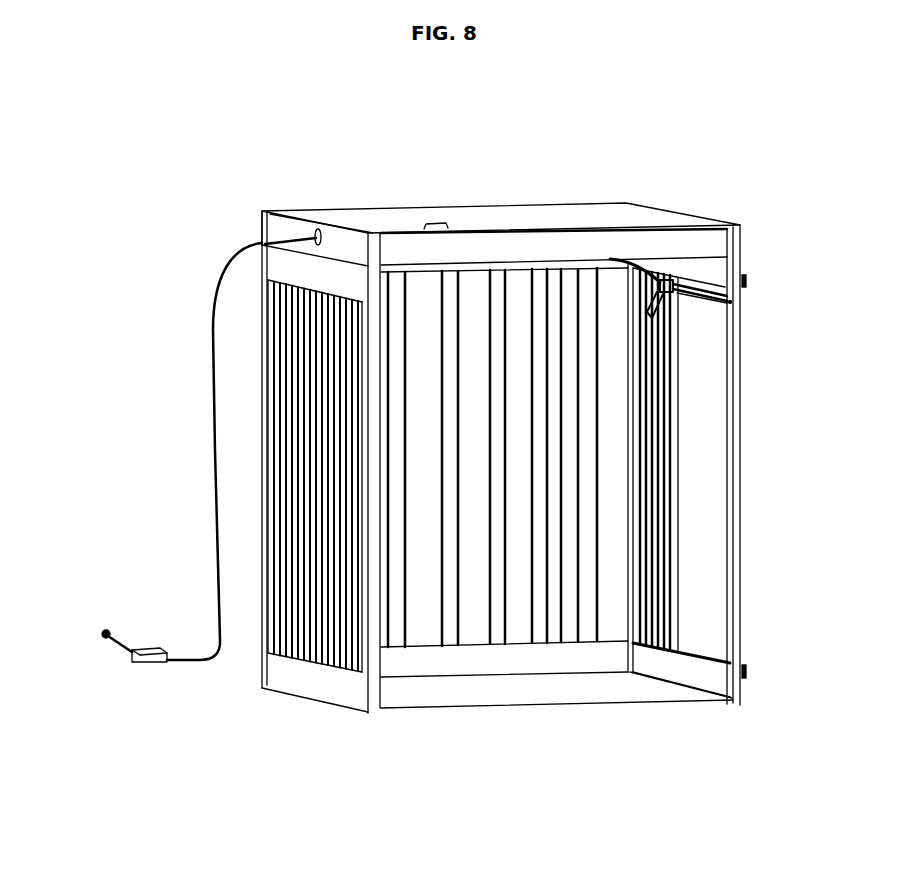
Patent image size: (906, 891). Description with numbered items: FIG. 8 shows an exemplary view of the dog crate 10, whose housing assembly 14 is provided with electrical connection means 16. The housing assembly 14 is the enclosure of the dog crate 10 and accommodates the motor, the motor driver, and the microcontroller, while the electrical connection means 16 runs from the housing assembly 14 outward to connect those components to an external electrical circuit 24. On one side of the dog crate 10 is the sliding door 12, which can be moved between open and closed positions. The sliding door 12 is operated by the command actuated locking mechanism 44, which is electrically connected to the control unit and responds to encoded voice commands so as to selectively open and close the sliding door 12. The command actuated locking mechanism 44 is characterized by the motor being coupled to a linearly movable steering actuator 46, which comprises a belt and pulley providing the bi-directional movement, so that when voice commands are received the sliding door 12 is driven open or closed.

The dog crate 10 is at (411, 420).
The sliding door 12 is at (680, 441).
The housing assembly 14 is at (315, 688).
The electrical connection means 16 is at (213, 457).
The external electrical circuit 24 is at (133, 653).
The command actuated locking mechanism 44 is at (666, 293).
The linearly movable steering actuator 46 is at (705, 298).